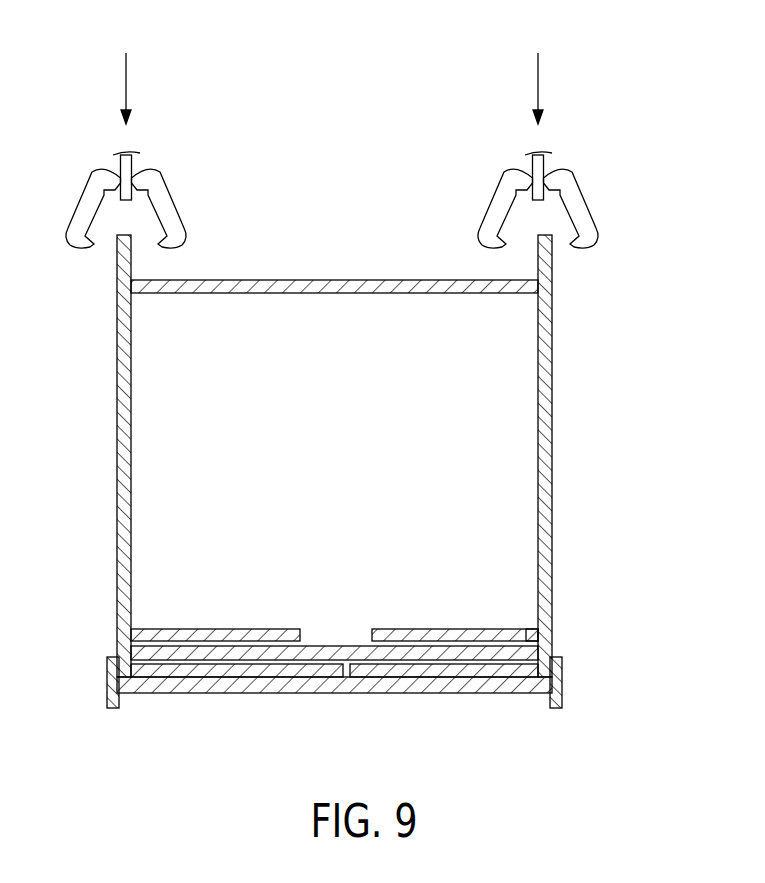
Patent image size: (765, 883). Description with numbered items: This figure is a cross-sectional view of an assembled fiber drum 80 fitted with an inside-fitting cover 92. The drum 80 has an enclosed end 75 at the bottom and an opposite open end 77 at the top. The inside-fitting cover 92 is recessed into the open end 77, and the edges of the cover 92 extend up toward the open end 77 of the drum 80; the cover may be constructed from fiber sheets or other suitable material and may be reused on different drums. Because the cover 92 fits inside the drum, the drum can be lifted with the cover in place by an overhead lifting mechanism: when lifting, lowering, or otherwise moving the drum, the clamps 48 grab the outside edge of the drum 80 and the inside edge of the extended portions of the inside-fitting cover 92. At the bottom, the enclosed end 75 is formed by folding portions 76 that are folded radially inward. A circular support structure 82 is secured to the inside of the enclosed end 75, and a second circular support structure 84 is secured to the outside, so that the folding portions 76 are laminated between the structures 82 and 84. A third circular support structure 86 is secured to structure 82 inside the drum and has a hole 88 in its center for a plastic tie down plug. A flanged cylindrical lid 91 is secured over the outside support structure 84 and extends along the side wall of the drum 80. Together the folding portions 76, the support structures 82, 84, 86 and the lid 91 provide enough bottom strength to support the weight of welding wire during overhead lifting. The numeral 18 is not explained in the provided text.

The container / carrier assembly 18 is at (360, 500).
The clamps 48 is at (588, 194).
The enclosed end 75 is at (299, 666).
The folding portions 76 is at (195, 645).
The open end 77 is at (224, 224).
The fiber drum 80 is at (556, 468).
The circular support structure 82 is at (531, 640).
The second circular support structure 84 is at (502, 697).
The third circular support structure 86 is at (440, 628).
The hole 88 is at (340, 645).
The flanged cylindrical lid 91 is at (123, 708).
The inside-fitting cover 92 is at (497, 281).